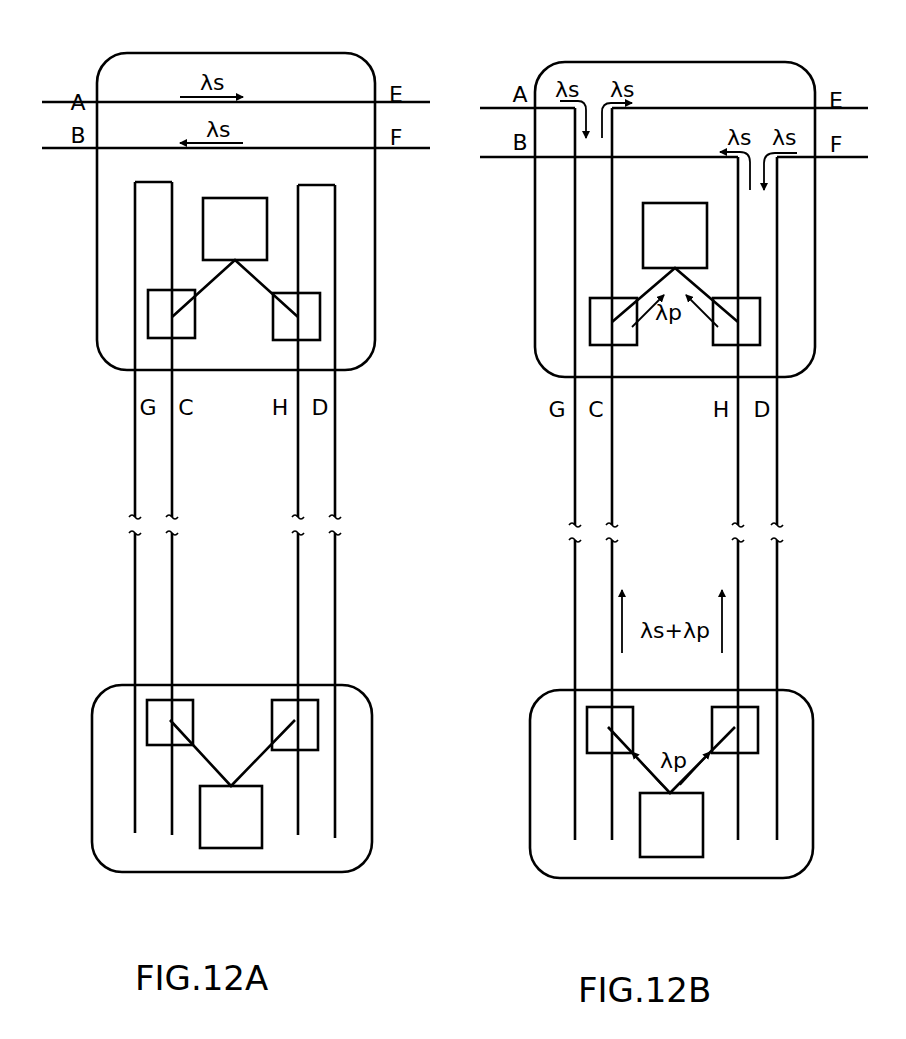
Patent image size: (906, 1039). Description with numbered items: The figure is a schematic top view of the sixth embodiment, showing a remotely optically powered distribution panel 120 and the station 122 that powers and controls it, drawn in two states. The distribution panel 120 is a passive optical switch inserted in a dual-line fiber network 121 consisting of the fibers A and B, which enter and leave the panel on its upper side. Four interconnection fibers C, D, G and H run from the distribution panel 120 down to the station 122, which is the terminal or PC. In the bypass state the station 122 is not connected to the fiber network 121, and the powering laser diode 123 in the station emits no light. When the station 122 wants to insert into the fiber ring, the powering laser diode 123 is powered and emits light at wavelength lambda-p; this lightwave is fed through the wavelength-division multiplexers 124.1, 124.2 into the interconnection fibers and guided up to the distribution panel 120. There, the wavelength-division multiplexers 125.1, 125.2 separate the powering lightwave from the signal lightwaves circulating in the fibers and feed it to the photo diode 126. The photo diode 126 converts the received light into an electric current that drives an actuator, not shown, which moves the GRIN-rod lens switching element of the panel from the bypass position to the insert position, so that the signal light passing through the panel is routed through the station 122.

In FIG. 12A, the distribution panel 120 is at (215, 63).
In FIG. 12B, the distribution panel 120 is at (667, 68).
In FIG. 12A, the fiber network 121 is at (53, 100).
In FIG. 12A, the station 122 is at (320, 872).
In FIG. 12B, the station 122 is at (745, 878).
In FIG. 12A, the powering laser diode 123 is at (233, 840).
In FIG. 12B, the powering laser diode 123 is at (657, 845).
In FIG. 12A, the wavelength-division multiplexer 124.1 is at (148, 710).
In FIG. 12B, the wavelength-division multiplexer 124.1 is at (590, 725).
In FIG. 12A, the wavelength-division multiplexer 124.2 is at (300, 705).
In FIG. 12B, the wavelength-division multiplexer 124.2 is at (755, 735).
In FIG. 12A, the wavelength-division multiplexer 125.1 is at (155, 320).
In FIG. 12B, the wavelength-division multiplexer 125.1 is at (597, 325).
In FIG. 12A, the wavelength-division multiplexer 125.2 is at (312, 322).
In FIG. 12B, the wavelength-division multiplexer 125.2 is at (757, 332).
In FIG. 12A, the photo diode 126 is at (258, 240).
In FIG. 12B, the photo diode 126 is at (702, 242).